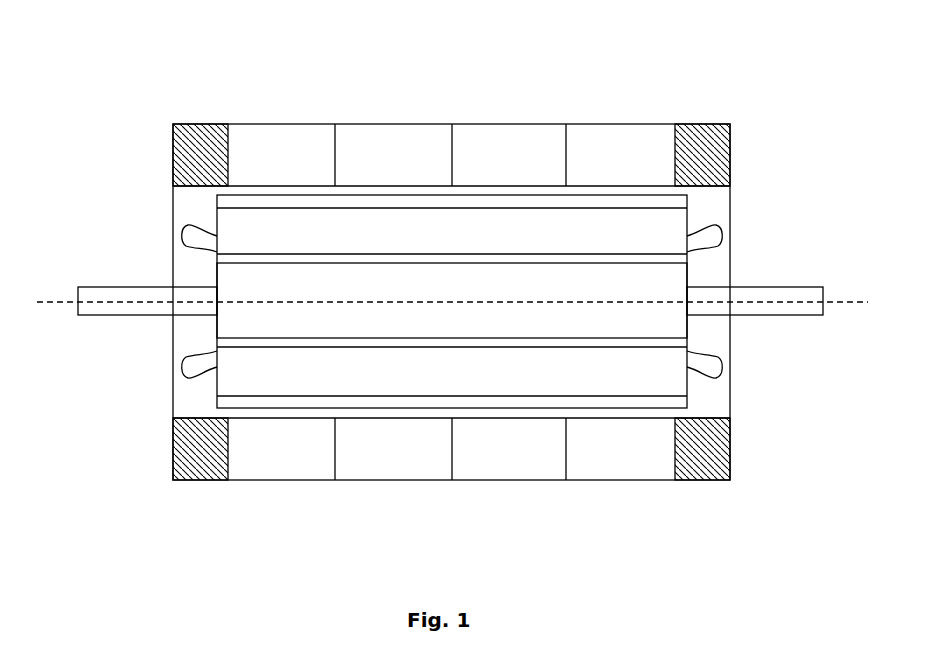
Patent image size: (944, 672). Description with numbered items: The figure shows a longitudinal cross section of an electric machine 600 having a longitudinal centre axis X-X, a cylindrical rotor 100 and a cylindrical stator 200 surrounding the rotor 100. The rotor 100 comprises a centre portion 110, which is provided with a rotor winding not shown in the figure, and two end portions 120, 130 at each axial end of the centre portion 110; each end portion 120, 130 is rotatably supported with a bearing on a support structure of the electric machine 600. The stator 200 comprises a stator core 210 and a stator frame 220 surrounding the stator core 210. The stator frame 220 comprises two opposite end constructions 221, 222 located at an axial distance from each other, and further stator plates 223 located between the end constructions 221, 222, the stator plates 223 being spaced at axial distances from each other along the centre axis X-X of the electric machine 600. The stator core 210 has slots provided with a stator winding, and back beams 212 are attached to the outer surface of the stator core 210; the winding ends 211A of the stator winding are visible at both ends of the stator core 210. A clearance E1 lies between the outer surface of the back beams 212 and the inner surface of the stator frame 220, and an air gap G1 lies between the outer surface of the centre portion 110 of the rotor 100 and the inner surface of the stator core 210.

The electric machine 600 is at (705, 65).
The stator 200 is at (250, 80).
The stator frame 220 is at (745, 156).
The end construction 221 is at (697, 124).
The end construction 222 is at (205, 133).
The stator plates 223 is at (452, 124).
The stator core 210 is at (658, 244).
The back beams 212 is at (468, 203).
The winding ends 211A is at (720, 233).
The rotor 100 is at (710, 275).
The centre portion 110 is at (658, 294).
The end portion 120 is at (803, 306).
The end portion 130 is at (101, 304).
The clearance E1 is at (203, 191).
The air gap G1 is at (203, 258).
The longitudinal centre axis X is at (52, 302).